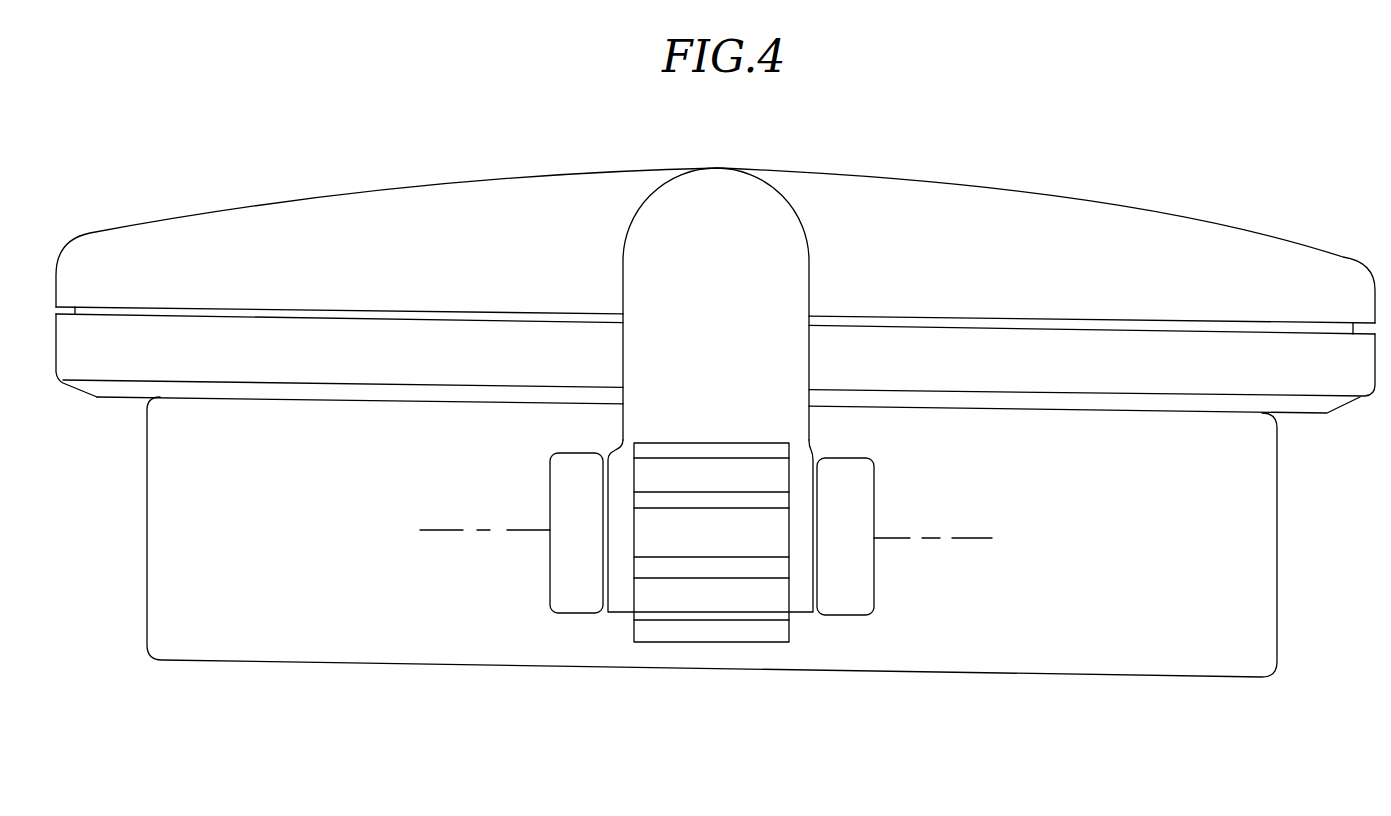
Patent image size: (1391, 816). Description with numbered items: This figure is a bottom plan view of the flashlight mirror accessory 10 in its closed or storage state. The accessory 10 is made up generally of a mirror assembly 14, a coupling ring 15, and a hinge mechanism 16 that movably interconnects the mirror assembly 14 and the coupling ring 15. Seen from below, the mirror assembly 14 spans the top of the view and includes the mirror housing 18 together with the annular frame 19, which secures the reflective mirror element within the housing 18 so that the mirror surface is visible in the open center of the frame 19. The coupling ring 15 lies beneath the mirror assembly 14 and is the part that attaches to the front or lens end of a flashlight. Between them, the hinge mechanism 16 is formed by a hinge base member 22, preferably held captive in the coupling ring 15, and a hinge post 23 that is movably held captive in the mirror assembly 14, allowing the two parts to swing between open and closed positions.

The flashlight mirror accessory 10 is at (950, 90).
The mirror assembly 14 is at (930, 170).
The coupling ring 15 is at (1070, 682).
The hinge mechanism 16 is at (537, 569).
The mirror housing 18 is at (1137, 210).
The annular frame 19 is at (1352, 405).
The hinge base member 22 is at (578, 613).
The hinge post 23 is at (679, 212).